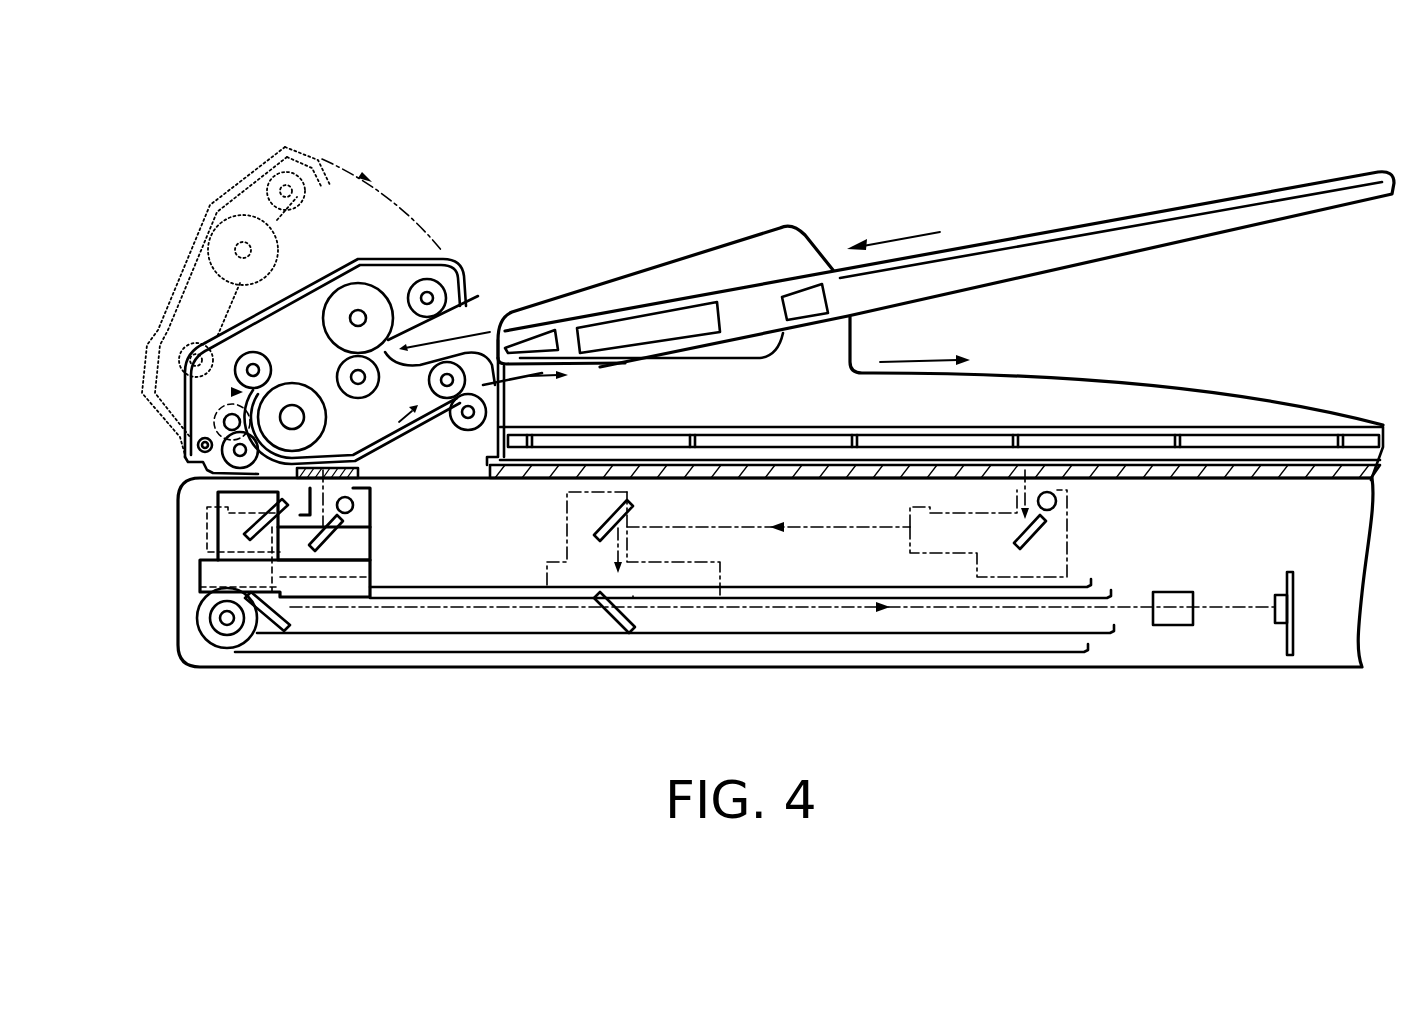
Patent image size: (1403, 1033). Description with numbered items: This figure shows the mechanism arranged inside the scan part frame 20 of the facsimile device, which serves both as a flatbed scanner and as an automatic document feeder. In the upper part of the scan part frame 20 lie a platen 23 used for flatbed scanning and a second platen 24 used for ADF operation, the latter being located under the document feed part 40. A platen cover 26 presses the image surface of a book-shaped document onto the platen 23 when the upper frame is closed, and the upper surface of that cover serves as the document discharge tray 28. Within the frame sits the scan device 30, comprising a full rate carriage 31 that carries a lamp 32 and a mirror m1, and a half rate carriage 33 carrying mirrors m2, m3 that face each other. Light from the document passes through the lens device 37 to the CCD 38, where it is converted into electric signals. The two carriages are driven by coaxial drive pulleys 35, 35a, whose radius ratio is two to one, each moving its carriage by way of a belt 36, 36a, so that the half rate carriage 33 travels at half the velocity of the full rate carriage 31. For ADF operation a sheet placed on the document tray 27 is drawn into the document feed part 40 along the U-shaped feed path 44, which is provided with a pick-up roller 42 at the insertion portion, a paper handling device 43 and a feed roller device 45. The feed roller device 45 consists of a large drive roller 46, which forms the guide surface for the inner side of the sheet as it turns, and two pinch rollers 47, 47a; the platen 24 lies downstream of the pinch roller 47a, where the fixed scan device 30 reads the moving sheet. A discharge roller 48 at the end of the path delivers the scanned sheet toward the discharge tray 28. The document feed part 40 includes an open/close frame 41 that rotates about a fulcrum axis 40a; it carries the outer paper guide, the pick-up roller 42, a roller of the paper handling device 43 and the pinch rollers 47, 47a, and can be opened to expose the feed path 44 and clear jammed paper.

The scan part frame 20 is at (1007, 700).
The platen 23 is at (1222, 476).
The platen 24 is at (363, 478).
The platen cover 26 is at (1147, 458).
The document tray 27 is at (1043, 237).
The document discharge tray 28 is at (1065, 372).
The scan device 30 is at (880, 565).
The full rate carriage 31 is at (385, 526).
The lamp 32 is at (1057, 503).
The half rate carriage 33 is at (208, 530).
The drive pulley 35 is at (225, 648).
The drive pulley 35a is at (212, 612).
The belt 36 is at (362, 653).
The belt 36a is at (450, 635).
The lens device 37 is at (1175, 627).
The CCD 38 is at (1283, 625).
The document feed part 40 is at (425, 237).
The fulcrum axis 40a is at (190, 453).
The open/close frame 41 is at (327, 276).
The pick-up roller 42 is at (478, 296).
The paper handling device 43 is at (360, 293).
The U-shaped feed path 44 is at (323, 350).
The feed roller device 45 is at (232, 392).
The drive roller 46 is at (316, 427).
The pinch roller 47 is at (240, 357).
The pinch roller 47a is at (222, 470).
The discharge roller 48 is at (487, 407).
The mirror m1 is at (1047, 537).
The mirror m2 is at (632, 504).
The mirror m3 is at (611, 624).